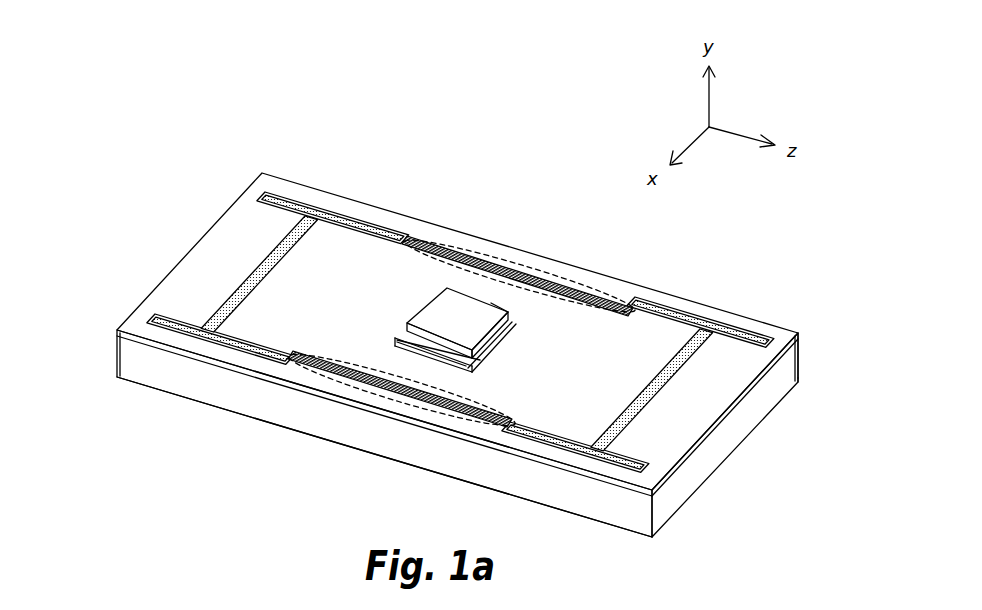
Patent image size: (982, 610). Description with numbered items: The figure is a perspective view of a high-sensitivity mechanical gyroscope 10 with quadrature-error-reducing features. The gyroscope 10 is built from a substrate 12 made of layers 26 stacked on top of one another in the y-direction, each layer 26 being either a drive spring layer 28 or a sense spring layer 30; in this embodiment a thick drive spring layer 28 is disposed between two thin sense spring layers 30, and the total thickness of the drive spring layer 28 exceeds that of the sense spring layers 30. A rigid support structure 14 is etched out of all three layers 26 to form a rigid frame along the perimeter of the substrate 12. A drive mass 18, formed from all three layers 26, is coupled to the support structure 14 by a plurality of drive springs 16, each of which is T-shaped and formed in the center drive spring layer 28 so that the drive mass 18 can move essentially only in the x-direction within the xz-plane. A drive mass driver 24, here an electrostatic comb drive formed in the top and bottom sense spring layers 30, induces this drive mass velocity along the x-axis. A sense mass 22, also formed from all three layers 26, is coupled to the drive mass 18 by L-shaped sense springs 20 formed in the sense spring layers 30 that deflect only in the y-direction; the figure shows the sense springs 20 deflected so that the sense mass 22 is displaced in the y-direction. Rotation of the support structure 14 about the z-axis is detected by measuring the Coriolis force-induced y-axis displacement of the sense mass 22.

The gyroscope 10 is at (206, 85).
The substrate 12 is at (117, 322).
The rigid support structure 14 is at (168, 279).
The drive springs 16 is at (350, 217).
The drive mass 18 is at (280, 246).
The sense springs 20 is at (408, 321).
The sense mass 22 is at (491, 303).
The drive mass driver 24 is at (597, 308).
The layers 26 is at (384, 457).
The drive spring layer 28 is at (800, 358).
The sense spring layer 30 is at (800, 334).